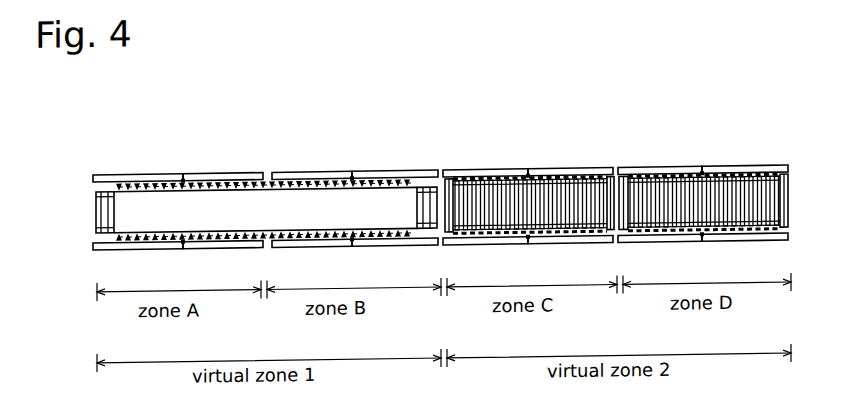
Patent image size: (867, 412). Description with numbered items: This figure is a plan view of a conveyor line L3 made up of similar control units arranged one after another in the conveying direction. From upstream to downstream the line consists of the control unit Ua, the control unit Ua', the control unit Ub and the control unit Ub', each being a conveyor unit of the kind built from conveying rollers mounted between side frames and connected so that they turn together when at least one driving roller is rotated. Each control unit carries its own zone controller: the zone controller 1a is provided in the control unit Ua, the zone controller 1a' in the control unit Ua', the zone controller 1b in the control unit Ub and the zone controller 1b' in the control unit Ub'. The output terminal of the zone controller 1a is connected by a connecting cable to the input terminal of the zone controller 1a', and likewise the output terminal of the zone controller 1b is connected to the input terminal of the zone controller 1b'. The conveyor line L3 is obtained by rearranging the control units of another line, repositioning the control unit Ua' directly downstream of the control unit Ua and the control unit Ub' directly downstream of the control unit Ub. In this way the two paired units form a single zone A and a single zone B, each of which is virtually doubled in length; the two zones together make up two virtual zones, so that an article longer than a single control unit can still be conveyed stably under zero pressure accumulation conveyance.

The conveyor line L3 is at (446, 145).
The control unit Ua is at (138, 185).
The zone controller 1a is at (223, 185).
The control unit Ua' is at (312, 182).
The zone controller 1a' is at (400, 189).
The control unit Ub is at (485, 178).
The zone controller 1b is at (570, 177).
The control unit Ub' is at (660, 172).
The zone controller 1b' is at (745, 174).